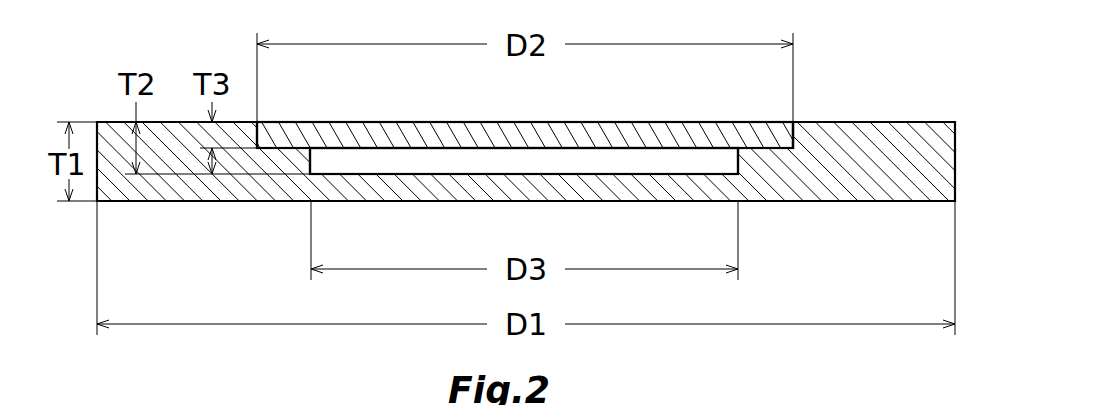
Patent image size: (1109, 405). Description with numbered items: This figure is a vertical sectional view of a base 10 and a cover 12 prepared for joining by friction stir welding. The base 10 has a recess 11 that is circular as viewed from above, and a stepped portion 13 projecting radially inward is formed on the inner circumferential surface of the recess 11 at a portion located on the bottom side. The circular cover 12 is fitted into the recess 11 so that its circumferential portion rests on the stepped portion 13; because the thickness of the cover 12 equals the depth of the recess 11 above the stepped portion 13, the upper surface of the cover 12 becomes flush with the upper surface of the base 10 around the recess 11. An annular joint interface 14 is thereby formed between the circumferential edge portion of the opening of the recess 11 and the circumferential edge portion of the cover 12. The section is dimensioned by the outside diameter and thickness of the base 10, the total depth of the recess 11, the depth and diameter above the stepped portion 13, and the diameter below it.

The base 10 is at (873, 121).
The recess 11 is at (665, 169).
The cover 12 is at (630, 120).
The stepped portion 13 is at (292, 148).
The annular joint interface 14 is at (793, 121).